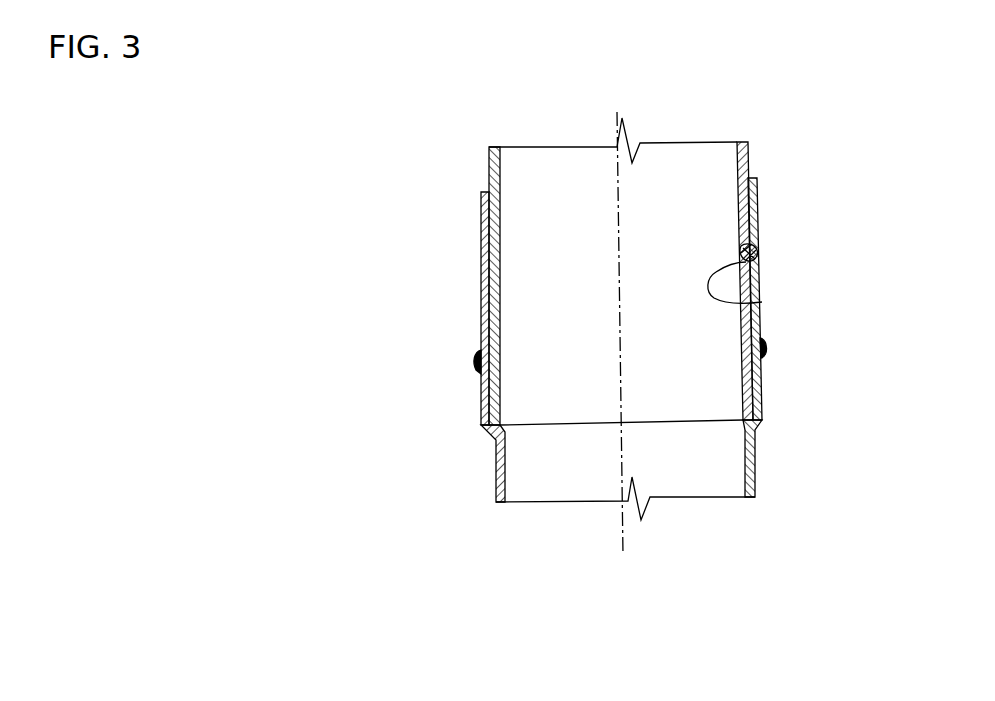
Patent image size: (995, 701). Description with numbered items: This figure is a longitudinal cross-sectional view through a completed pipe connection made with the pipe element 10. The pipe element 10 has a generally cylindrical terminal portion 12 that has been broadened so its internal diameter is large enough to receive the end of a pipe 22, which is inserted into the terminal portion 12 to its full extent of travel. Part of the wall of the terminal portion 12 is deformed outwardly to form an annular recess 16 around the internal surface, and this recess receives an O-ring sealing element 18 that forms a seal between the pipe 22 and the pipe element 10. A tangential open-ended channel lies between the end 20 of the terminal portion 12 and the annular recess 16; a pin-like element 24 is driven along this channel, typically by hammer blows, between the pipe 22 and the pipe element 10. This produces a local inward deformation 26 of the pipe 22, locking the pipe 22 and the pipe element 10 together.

The pipe element 10 is at (466, 524).
The terminal portion 12 is at (462, 212).
The annular recess 16 is at (765, 352).
The O-ring sealing element 18 is at (764, 338).
The end 20 is at (757, 178).
The pipe 22 is at (745, 140).
The pin-like element 24 is at (758, 236).
The local inward deformation 26 is at (762, 302).